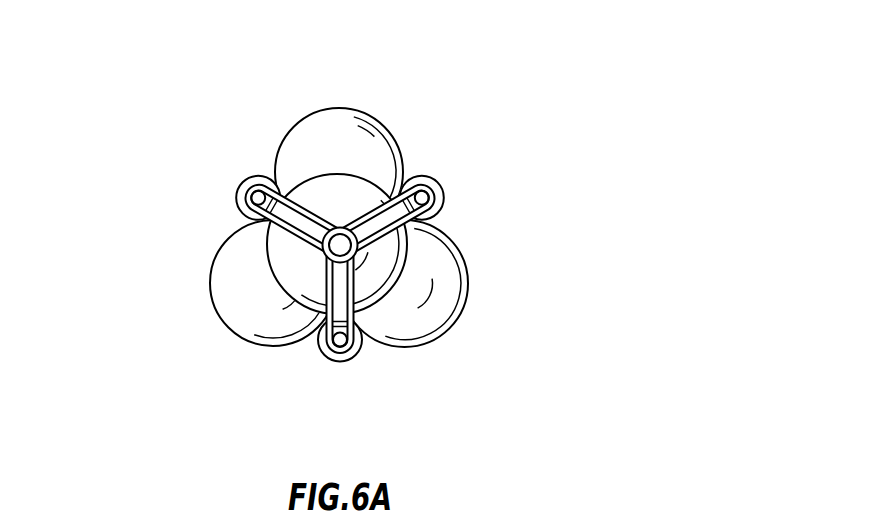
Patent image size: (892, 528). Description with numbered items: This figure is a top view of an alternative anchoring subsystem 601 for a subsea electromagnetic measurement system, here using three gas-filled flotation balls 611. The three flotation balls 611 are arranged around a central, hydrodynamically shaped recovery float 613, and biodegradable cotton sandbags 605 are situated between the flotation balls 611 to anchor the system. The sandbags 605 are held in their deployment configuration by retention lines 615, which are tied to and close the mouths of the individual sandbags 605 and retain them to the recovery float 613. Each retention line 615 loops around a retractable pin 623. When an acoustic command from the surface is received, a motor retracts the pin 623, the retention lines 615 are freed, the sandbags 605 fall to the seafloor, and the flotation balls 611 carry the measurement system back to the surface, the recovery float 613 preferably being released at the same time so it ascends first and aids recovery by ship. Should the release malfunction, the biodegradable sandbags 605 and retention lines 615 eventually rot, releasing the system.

The anchoring subsystem 601 is at (632, 110).
The biodegradable cotton sandbag 605 is at (238, 185).
The flotation ball 611 is at (328, 110).
The recovery float 613 is at (313, 193).
The retention line 615 is at (265, 238).
The retractable pin 623 is at (329, 358).